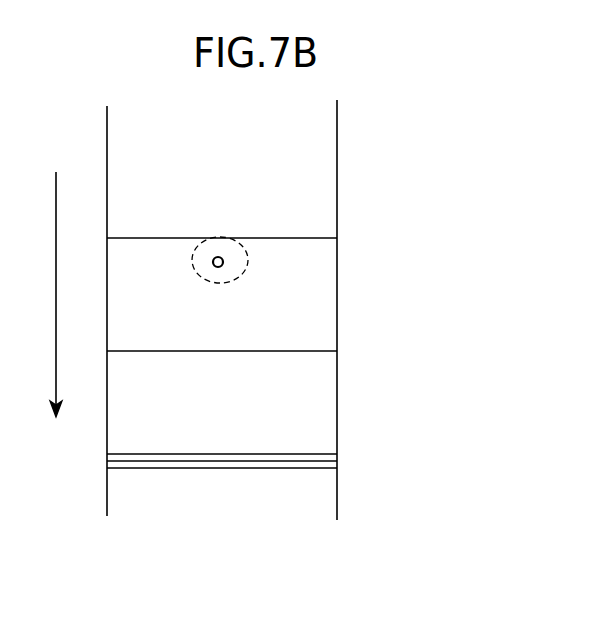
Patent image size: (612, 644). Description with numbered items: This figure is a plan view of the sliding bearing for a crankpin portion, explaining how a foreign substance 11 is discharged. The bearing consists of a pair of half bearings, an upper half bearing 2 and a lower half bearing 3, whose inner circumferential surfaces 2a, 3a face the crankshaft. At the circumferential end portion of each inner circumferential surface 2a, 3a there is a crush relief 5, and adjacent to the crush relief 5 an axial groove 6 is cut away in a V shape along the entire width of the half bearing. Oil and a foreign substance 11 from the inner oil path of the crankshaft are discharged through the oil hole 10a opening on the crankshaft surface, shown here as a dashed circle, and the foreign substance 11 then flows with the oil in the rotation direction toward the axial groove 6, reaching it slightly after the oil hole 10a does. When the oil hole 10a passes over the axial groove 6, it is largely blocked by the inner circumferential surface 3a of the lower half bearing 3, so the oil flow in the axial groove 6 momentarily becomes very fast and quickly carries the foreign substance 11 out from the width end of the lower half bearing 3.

The upper half bearing 2 is at (367, 148).
The inner circumferential surface of the upper half bearing 2a is at (287, 175).
The lower half bearing 3 is at (367, 523).
The inner circumferential surface of the lower half bearing 3a is at (287, 498).
The crush relief 5 is at (298, 324).
The axial groove 6 is at (288, 457).
The oil hole 10a is at (248, 262).
The foreign substance 11 is at (218, 257).